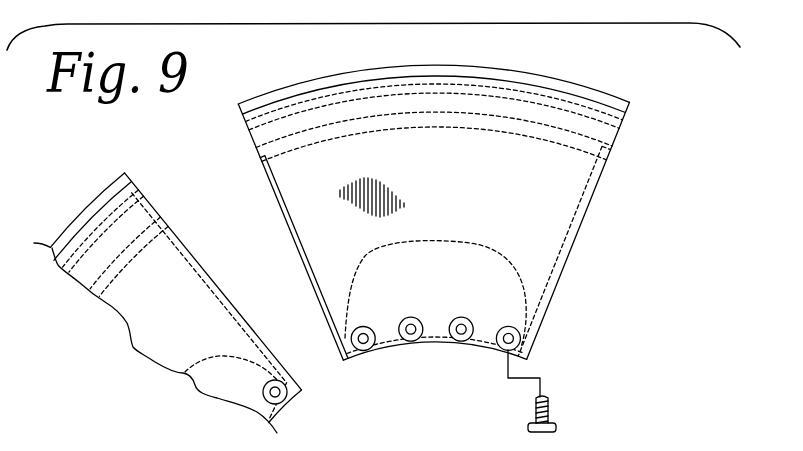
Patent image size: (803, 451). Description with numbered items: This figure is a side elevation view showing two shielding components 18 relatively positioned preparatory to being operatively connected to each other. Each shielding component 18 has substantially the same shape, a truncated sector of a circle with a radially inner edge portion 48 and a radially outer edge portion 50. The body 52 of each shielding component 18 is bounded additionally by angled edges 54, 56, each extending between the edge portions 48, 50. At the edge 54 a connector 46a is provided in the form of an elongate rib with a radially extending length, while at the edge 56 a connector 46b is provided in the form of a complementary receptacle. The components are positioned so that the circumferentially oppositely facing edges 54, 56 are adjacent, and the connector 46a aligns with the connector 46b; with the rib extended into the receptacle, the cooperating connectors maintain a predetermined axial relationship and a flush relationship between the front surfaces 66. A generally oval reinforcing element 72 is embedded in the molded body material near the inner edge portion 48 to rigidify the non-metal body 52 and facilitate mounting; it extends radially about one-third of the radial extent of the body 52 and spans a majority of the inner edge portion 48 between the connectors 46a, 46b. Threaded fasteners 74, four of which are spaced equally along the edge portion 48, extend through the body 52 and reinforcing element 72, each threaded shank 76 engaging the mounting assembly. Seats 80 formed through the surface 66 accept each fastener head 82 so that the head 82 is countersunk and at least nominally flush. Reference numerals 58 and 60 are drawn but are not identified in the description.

The shielding component 18 is at (550, 233).
The connector 46a is at (283, 239).
The connector 46b is at (585, 241).
The radially inner edge portion 48 is at (440, 348).
The radially outer edge portion 50 is at (484, 67).
The body 52 is at (527, 163).
The angled edge 54 is at (253, 140).
The angled edge 56 is at (556, 289).
The edge strip 58 is at (266, 201).
The fold line 60 is at (196, 268).
The front surface 66 is at (384, 160).
The reinforcing element 72 is at (451, 270).
The threaded fastener 74 is at (551, 416).
The threaded shank 76 is at (549, 396).
The seat 80 is at (503, 350).
The fastener head 82 is at (557, 427).